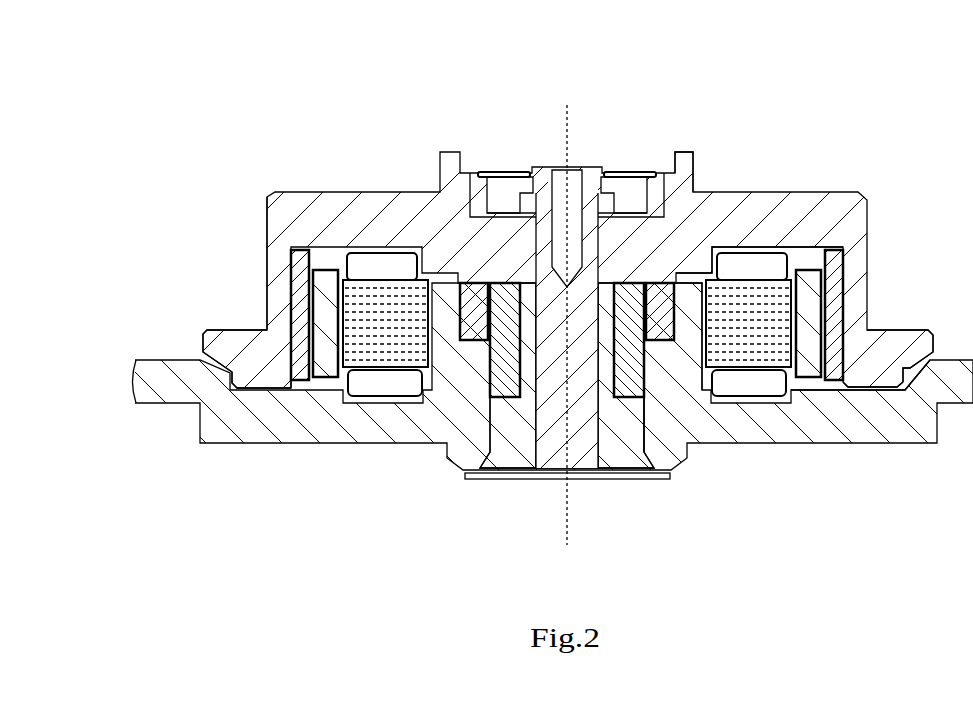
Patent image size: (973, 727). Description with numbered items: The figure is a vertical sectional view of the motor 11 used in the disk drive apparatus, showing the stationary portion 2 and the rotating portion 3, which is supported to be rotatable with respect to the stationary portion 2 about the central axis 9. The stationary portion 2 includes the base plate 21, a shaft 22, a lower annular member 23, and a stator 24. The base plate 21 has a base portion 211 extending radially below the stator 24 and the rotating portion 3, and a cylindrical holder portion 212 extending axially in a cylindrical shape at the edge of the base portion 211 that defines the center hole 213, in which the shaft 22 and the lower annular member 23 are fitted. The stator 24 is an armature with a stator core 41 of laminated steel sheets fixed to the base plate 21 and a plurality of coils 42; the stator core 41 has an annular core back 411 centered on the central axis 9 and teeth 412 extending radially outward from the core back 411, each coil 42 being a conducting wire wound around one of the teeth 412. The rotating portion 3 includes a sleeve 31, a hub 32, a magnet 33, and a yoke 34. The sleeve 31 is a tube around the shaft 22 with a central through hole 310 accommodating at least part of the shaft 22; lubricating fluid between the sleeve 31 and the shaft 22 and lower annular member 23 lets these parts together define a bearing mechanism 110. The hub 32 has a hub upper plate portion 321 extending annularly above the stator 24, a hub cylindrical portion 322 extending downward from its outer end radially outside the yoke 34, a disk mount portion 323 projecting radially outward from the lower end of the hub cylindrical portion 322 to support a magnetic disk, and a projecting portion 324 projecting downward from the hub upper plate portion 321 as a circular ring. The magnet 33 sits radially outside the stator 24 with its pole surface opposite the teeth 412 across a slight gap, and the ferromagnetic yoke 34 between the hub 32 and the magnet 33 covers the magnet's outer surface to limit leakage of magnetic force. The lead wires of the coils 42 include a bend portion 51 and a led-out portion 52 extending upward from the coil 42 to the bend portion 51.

The stationary portion 2 is at (305, 460).
The rotating portion 3 is at (567, 306).
The central axis 9 is at (567, 121).
The motor 11 is at (344, 100).
The base plate 21 is at (764, 417).
The shaft 22 is at (584, 455).
The lower annular member 23 is at (518, 450).
The stator 24 is at (556, 339).
The sleeve 31 is at (493, 247).
The hub 32 is at (796, 229).
The magnet 33 is at (813, 362).
The yoke 34 is at (846, 365).
The stator core 41 is at (554, 323).
The coil 42 is at (376, 384).
The bend portion 51 is at (266, 246).
The led-out portion 52 is at (230, 326).
The bearing mechanism 110 is at (630, 160).
The base portion 211 is at (748, 428).
The cylindrical holder portion 212 is at (668, 395).
The center hole 213 is at (629, 427).
The central through hole 310 is at (548, 352).
The hub upper plate portion 321 is at (734, 215).
The hub cylindrical portion 322 is at (855, 300).
The disk mount portion 323 is at (918, 328).
The projecting portion 324 is at (795, 250).
The core back 411 is at (427, 327).
The teeth 412 is at (383, 330).